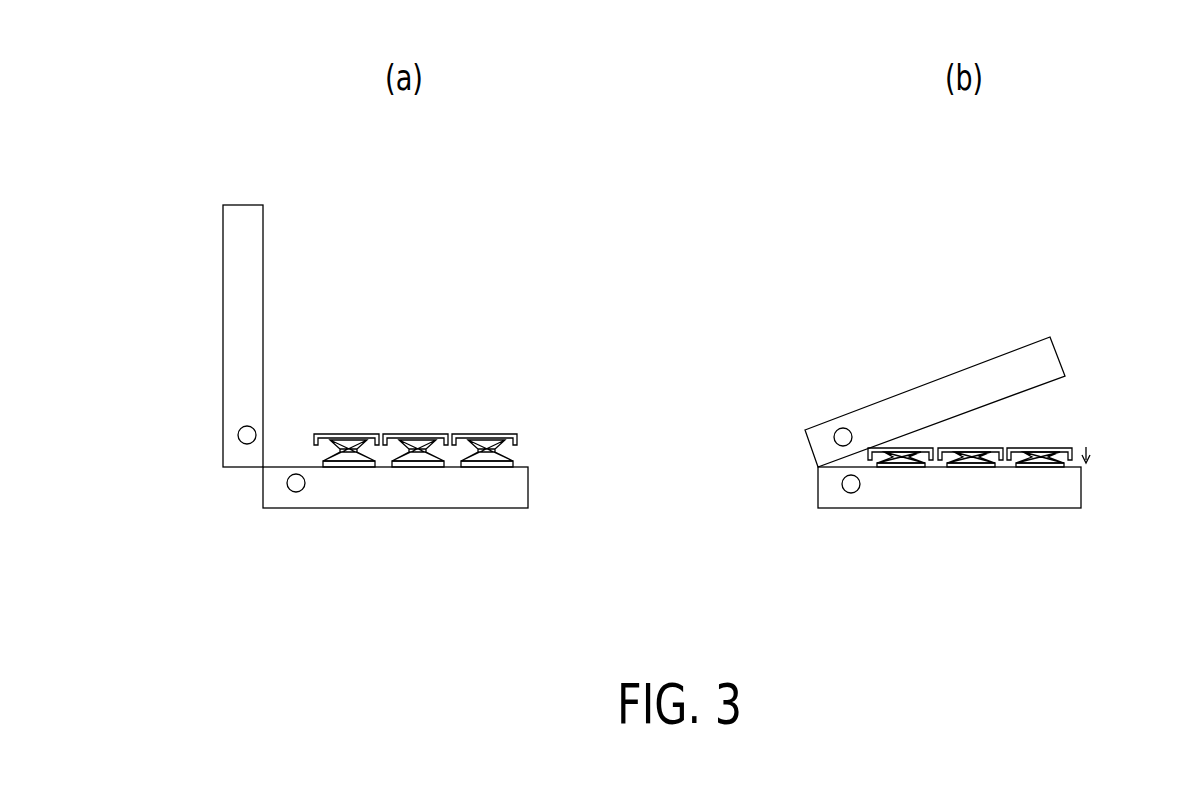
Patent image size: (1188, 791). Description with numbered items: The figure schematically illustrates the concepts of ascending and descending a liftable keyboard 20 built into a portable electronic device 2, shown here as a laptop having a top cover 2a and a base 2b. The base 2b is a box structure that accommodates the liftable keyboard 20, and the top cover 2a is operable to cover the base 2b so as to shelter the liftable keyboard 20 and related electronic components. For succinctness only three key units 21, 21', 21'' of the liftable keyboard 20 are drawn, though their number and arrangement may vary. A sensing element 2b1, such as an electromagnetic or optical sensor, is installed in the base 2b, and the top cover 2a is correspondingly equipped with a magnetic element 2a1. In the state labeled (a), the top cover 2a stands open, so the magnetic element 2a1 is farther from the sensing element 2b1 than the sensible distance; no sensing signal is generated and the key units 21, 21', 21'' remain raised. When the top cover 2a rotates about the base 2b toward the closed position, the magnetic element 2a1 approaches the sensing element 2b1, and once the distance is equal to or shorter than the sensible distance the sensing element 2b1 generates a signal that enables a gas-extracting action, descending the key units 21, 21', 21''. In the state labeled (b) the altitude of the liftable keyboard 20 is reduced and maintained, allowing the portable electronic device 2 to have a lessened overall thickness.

The portable electronic device 2 is at (530, 185).
The top cover 2a is at (245, 278).
The magnetic element 2a1 is at (238, 430).
The base 2b is at (427, 487).
The sensing element 2b1 is at (300, 492).
The liftable keyboard 20 is at (692, 463).
The key unit 21 is at (623, 466).
The key unit 21' is at (690, 466).
The key unit 21'' is at (757, 466).